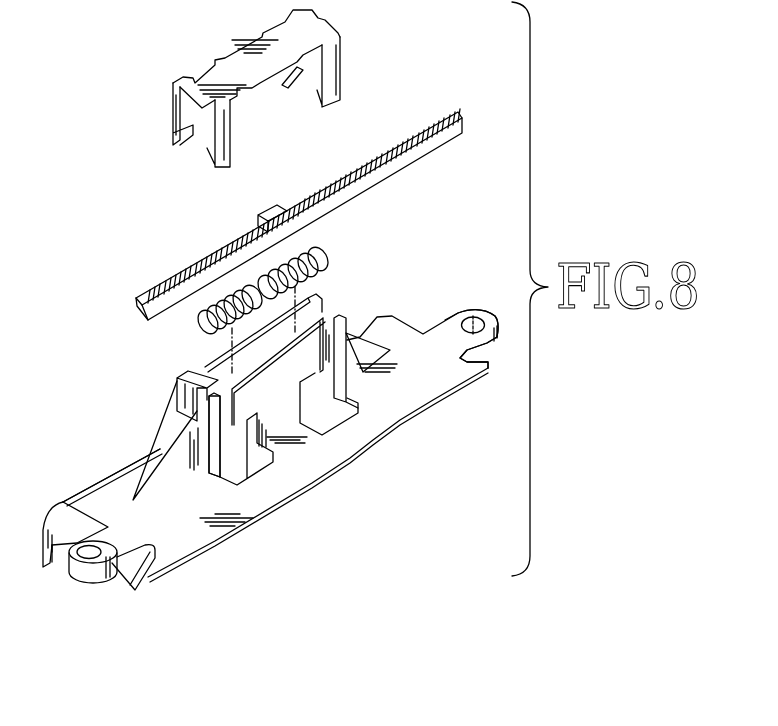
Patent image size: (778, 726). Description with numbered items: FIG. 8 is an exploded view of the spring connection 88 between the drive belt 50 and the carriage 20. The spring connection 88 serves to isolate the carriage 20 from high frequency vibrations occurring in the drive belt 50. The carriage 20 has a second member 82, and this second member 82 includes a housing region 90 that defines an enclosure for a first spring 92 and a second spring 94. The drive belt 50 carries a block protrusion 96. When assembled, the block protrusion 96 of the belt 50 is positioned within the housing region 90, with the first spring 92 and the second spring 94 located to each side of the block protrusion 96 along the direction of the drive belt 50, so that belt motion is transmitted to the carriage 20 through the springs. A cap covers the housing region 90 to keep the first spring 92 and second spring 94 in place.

The carriage 20 is at (445, 308).
The drive belt 50 is at (437, 122).
The second member 82 is at (405, 335).
The spring connection 88 is at (158, 377).
The housing region 90 is at (197, 478).
The first spring 92 is at (197, 318).
The second spring 94 is at (324, 250).
The block protrusion 96 is at (288, 205).